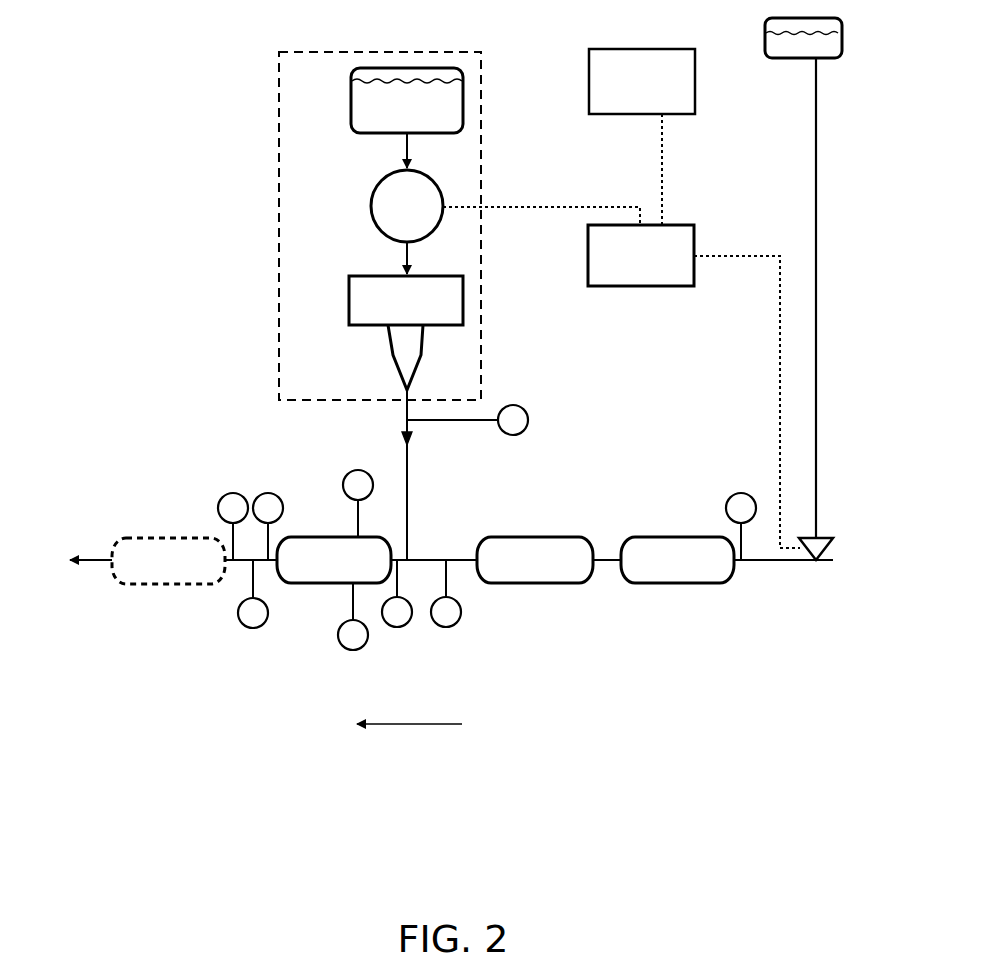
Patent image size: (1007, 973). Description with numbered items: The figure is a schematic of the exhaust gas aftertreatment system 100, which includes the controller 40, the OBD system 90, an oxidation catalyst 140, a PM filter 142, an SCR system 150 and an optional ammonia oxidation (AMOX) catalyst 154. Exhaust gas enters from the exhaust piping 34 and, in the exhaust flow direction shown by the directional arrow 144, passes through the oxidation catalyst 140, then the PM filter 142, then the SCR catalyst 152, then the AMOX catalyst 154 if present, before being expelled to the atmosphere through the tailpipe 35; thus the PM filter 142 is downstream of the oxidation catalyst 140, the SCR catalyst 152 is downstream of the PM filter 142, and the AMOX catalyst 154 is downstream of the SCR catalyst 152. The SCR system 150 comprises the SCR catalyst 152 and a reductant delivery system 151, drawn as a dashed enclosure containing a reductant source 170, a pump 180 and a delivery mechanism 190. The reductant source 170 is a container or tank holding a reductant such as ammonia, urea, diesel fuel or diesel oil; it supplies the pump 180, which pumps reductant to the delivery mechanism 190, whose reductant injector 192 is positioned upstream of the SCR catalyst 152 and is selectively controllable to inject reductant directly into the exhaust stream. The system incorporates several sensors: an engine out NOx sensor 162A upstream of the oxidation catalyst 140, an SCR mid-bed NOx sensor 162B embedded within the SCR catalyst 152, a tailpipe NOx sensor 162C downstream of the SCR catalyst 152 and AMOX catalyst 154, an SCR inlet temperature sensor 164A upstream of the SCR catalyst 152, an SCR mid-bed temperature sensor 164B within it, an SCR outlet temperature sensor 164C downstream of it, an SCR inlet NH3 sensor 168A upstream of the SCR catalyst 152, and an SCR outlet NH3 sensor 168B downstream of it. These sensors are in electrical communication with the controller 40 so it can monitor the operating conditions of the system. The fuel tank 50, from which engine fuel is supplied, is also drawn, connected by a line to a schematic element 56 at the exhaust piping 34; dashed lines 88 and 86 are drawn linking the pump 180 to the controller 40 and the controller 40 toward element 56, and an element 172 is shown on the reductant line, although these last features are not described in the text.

The exhaust gas aftertreatment system 100 is at (236, 788).
The exhaust piping 34 is at (790, 561).
The tailpipe 35 is at (82, 565).
The controller 40 is at (694, 225).
The fuel tank 50 is at (765, 40).
The fuel injector 56 is at (826, 538).
The controller-injector communication line 86 is at (770, 302).
The controller-pump communication line 88 is at (534, 207).
The OBD system 90 is at (666, 49).
The oxidation catalyst 140 is at (670, 584).
The PM filter 142 is at (556, 584).
The directional arrow 144 is at (419, 726).
The SCR system 150 is at (244, 203).
The reductant delivery system 151 is at (375, 51).
The SCR catalyst 152 is at (312, 584).
The ammonia oxidation (AMOX) catalyst 154 is at (161, 586).
The engine out NOx sensor 162A is at (730, 496).
The SCR mid-bed NOx sensor 162B is at (356, 470).
The tailpipe NOx sensor 162C is at (224, 495).
The SCR inlet temperature sensor 164A is at (457, 623).
The SCR mid-bed temperature sensor 164B is at (354, 651).
The SCR outlet temperature sensor 164C is at (252, 629).
The SCR inlet NH3 sensor 168A is at (397, 628).
The SCR outlet NH3 sensor 168B is at (274, 495).
The reductant source 170 is at (351, 96).
The flow sensor 172 is at (523, 405).
The pump 180 is at (371, 212).
The delivery mechanism 190 is at (349, 300).
The reductant injector 192 is at (393, 359).